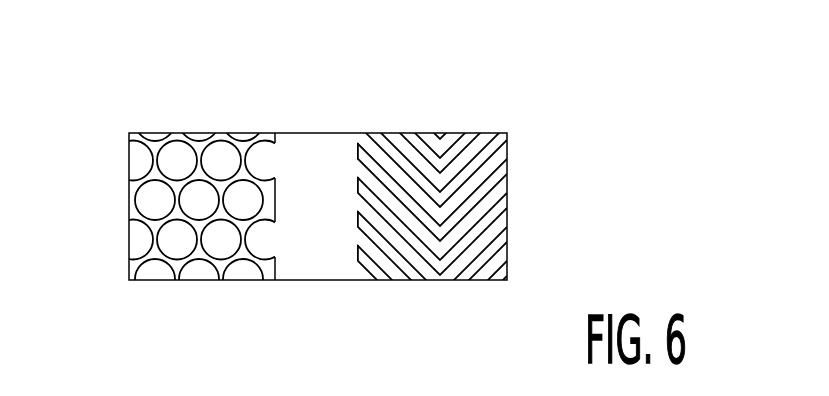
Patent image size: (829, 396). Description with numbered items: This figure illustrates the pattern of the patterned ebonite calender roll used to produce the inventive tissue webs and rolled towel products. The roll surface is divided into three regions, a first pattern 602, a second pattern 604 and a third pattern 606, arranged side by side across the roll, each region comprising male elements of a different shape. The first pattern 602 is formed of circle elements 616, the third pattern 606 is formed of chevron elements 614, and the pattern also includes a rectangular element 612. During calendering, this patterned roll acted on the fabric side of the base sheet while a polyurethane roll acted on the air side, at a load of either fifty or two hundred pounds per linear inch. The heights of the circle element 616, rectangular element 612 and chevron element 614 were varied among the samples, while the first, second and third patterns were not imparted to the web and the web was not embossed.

The first pattern 602 is at (275, 120).
The second pattern 604 is at (355, 118).
The third pattern 606 is at (507, 118).
The rectangular element 612 is at (327, 245).
The chevron element 614 is at (493, 207).
The circle element 616 is at (130, 232).